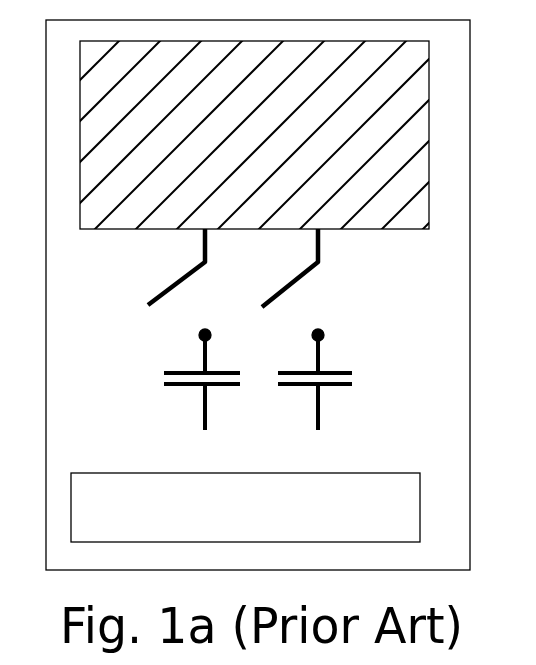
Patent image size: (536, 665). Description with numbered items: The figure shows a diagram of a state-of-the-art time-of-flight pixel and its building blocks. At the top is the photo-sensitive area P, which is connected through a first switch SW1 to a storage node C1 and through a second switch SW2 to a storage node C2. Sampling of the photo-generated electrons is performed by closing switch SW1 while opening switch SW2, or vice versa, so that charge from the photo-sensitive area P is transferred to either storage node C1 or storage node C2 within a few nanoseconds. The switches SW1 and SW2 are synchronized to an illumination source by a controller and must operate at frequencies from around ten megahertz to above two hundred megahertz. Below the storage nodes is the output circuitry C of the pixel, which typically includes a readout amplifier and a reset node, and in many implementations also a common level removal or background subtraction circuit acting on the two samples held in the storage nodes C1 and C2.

The photo-sensitive area P is at (268, 120).
The first switch SW1 is at (191, 328).
The second switch SW2 is at (304, 328).
The storage node C1 is at (202, 382).
The storage node C2 is at (315, 382).
The output circuitry C is at (245, 507).